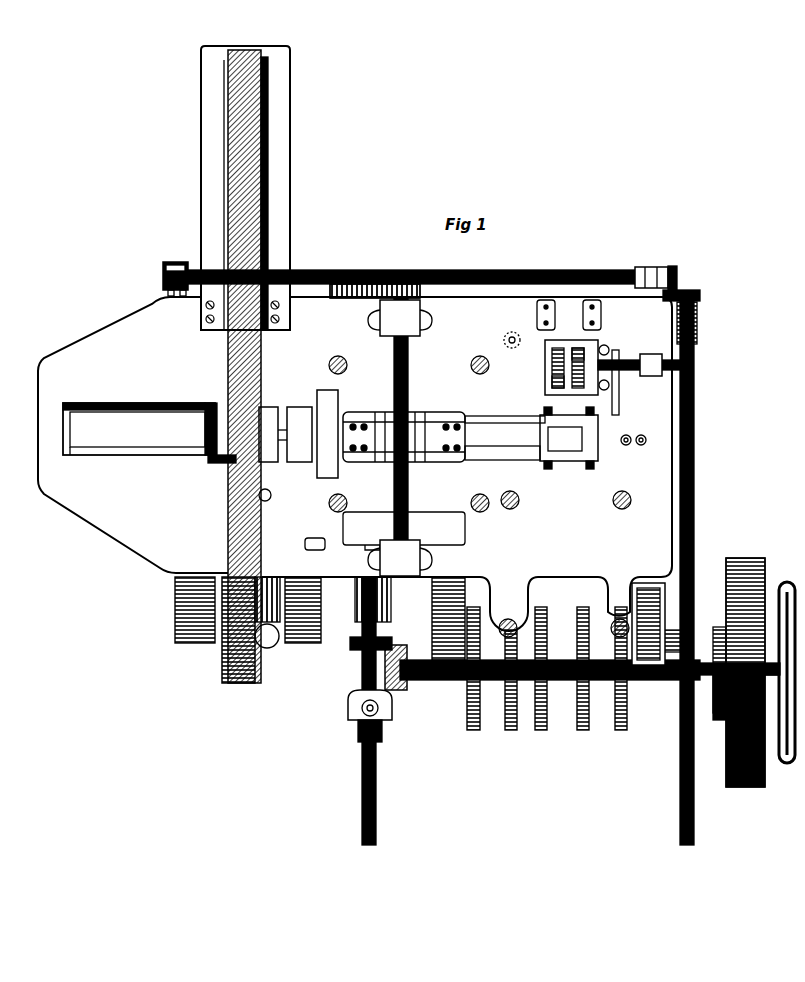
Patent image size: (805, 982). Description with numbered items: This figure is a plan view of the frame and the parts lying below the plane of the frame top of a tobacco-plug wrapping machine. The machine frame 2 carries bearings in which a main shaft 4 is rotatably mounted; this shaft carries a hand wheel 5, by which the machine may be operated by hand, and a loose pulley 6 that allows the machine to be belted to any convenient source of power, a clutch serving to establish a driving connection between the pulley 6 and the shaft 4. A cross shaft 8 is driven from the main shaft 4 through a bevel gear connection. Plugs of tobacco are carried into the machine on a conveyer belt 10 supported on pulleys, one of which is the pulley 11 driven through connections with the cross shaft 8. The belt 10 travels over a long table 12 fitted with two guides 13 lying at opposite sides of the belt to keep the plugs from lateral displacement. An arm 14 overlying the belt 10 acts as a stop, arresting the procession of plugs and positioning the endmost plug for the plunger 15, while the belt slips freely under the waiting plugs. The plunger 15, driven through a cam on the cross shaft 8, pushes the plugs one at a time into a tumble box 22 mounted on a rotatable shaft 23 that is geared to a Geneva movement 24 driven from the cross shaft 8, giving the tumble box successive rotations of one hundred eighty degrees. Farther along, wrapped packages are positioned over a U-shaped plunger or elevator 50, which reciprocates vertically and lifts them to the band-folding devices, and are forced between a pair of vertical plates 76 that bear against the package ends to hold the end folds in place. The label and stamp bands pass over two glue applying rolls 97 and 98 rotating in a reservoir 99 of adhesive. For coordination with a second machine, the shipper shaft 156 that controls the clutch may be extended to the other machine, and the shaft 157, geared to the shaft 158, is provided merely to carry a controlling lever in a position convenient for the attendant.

The machine frame 2 is at (108, 517).
The main shaft 4 is at (668, 682).
The hand wheel 5 is at (785, 584).
The loose pulley 6 is at (749, 560).
The cross shaft 8 is at (364, 656).
The conveyer belt 10 is at (240, 146).
The pulley 11 is at (224, 674).
The table 12 is at (210, 99).
The guides 13 is at (256, 116).
The arm 14 is at (228, 462).
The plunger 15 is at (190, 435).
The tumble box 22 is at (392, 462).
The rotatable shaft 23 is at (404, 354).
The Geneva movement 24 is at (363, 284).
The U-shaped plunger or elevator 50 is at (565, 439).
The vertical plates 76 is at (592, 456).
The glue applying roll 97 is at (584, 350).
The glue applying roll 98 is at (552, 356).
The reservoir 99 is at (552, 388).
The shipper shaft 156 is at (695, 457).
The shaft 157 is at (568, 276).
The shaft 158 is at (378, 776).